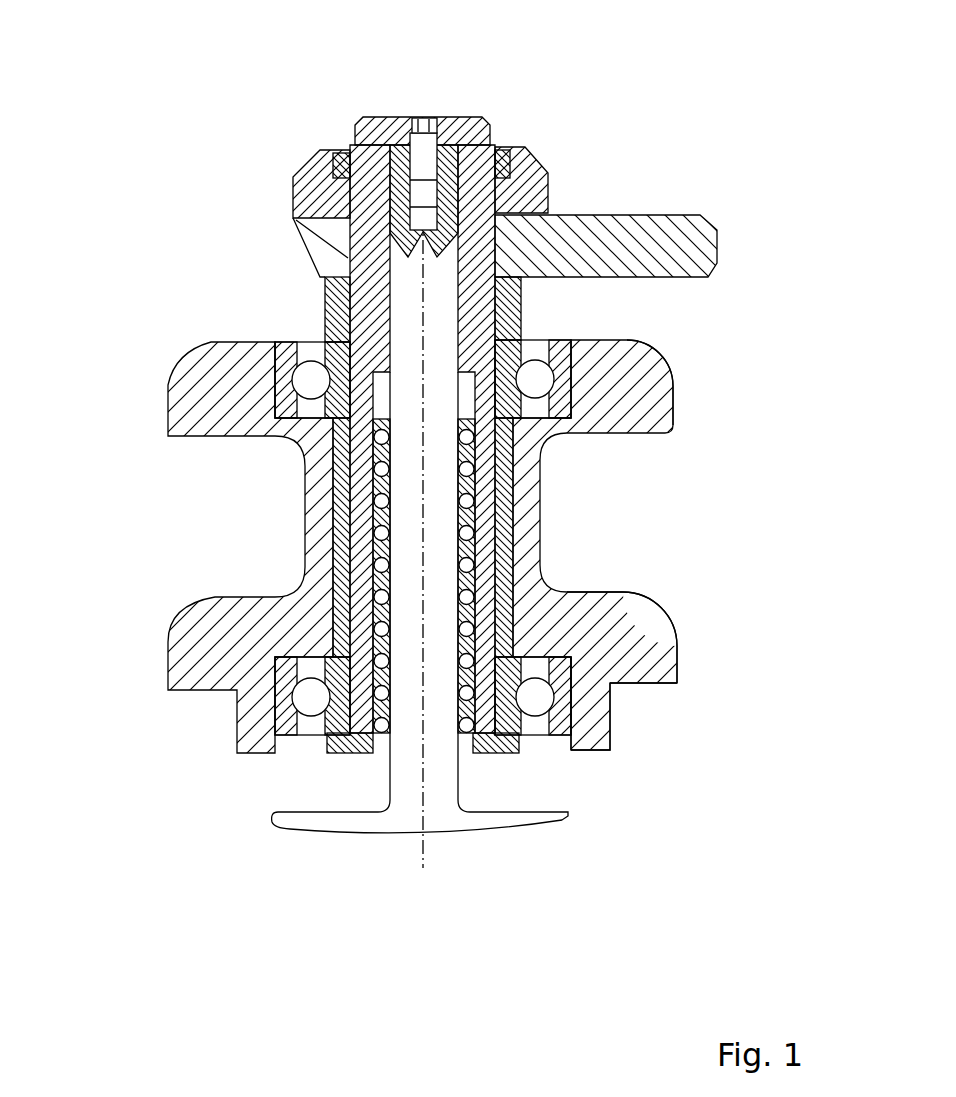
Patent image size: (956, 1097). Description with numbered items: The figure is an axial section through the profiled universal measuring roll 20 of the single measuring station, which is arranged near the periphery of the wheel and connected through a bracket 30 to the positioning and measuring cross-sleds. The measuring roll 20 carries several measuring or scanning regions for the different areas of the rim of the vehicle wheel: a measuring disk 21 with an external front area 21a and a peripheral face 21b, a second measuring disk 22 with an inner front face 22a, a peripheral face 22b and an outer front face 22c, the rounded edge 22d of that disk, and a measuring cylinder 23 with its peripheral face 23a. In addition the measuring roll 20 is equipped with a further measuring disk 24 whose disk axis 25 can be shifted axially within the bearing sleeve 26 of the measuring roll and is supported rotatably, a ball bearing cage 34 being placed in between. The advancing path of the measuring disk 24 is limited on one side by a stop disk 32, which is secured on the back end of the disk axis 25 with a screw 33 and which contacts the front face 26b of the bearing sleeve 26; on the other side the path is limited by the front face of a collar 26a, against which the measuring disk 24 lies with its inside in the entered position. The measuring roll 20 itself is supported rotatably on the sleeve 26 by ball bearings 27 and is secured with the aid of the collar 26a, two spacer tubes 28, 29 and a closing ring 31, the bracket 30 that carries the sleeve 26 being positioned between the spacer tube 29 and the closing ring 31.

The universal measuring roll 20 is at (176, 338).
The measuring disk 21 is at (630, 395).
The external front area 21a is at (627, 340).
The peripheral face 21b is at (675, 415).
The measuring disk 22 is at (237, 647).
The inner front face 22a is at (623, 592).
The peripheral face 22b is at (675, 662).
The outer front face 22c is at (643, 683).
The lower housing rounded edge 22d is at (665, 610).
The measuring cylinder 23 is at (592, 707).
The peripheral face 23a is at (608, 732).
The measuring disk 24 is at (387, 822).
The disk axis 25 is at (410, 523).
The bearing sleeve 26 is at (368, 290).
The collar 26a is at (353, 750).
The front face 26b is at (366, 142).
The ball bearings 27 is at (558, 340).
The spacer tube 28 is at (503, 486).
The spacer tube 29 is at (352, 212).
The bracket 30 is at (620, 245).
The closing ring 31 is at (530, 183).
The stop disk 32 is at (468, 130).
The screw 33 is at (418, 117).
The ball bearing cage 34 is at (460, 547).